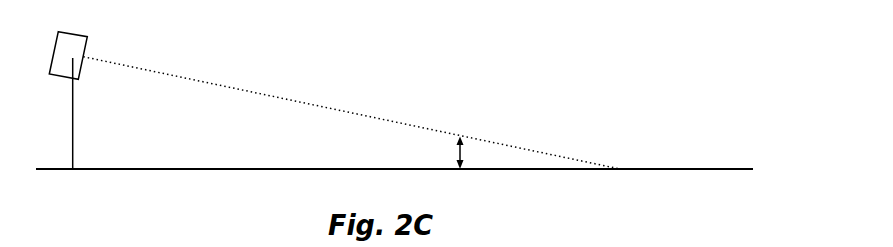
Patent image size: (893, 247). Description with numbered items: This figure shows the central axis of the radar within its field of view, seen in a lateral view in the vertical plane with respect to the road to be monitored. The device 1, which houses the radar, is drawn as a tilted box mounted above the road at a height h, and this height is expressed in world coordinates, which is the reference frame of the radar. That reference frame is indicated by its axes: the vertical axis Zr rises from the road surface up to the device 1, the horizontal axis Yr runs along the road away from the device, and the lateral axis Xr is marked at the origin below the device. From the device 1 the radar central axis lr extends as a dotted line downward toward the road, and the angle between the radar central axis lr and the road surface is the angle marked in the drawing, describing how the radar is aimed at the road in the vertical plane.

The device 1 is at (94, 34).
The height h is at (63, 78).
The vertical axis of radar world coordinates Zr is at (59, 124).
The horizontal axis of radar world coordinates Yr is at (394, 157).
The lateral axis of radar world coordinates Xr is at (73, 181).
The radar central axis lr is at (351, 113).